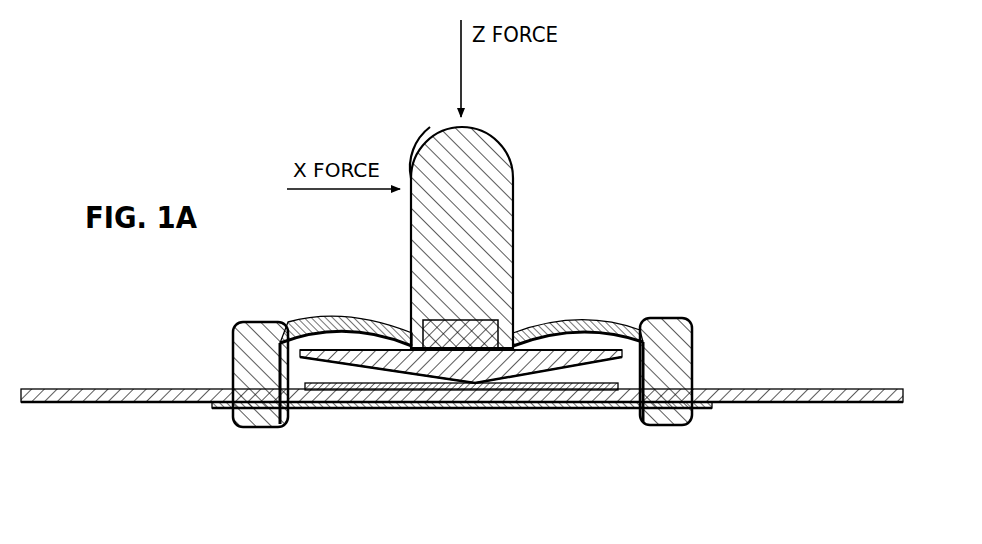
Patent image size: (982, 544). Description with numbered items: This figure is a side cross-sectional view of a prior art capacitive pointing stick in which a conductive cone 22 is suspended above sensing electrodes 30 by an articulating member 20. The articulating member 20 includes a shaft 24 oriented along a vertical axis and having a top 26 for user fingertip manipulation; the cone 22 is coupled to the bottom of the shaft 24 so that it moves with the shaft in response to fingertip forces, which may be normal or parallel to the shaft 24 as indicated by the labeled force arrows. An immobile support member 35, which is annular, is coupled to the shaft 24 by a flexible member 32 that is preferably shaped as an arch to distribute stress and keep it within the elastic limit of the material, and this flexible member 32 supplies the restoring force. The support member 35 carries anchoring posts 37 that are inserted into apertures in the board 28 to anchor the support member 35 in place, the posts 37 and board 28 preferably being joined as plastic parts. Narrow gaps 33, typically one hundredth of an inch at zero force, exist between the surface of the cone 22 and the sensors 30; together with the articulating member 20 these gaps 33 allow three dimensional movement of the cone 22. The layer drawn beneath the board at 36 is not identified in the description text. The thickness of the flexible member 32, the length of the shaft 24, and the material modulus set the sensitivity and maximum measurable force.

The articulating member 20 is at (602, 190).
The conductive cone 22 is at (562, 348).
The shaft 24 is at (513, 172).
The top 26 is at (423, 143).
The board 28 is at (807, 388).
The sensing electrodes 30 is at (333, 384).
The flexible member 32 is at (352, 318).
The narrow gaps 33 is at (296, 378).
The support member 35 is at (690, 342).
The lower support layer 36 is at (422, 408).
The anchoring posts 37 is at (662, 416).